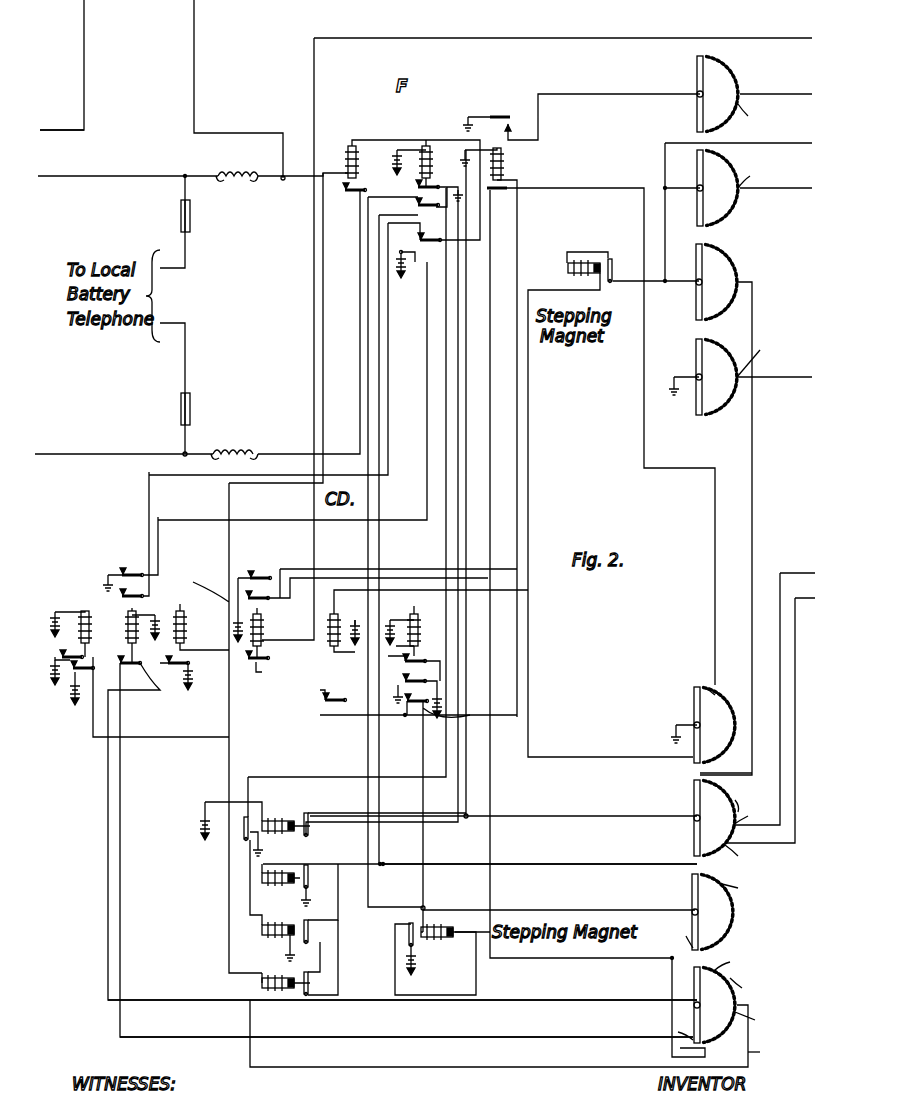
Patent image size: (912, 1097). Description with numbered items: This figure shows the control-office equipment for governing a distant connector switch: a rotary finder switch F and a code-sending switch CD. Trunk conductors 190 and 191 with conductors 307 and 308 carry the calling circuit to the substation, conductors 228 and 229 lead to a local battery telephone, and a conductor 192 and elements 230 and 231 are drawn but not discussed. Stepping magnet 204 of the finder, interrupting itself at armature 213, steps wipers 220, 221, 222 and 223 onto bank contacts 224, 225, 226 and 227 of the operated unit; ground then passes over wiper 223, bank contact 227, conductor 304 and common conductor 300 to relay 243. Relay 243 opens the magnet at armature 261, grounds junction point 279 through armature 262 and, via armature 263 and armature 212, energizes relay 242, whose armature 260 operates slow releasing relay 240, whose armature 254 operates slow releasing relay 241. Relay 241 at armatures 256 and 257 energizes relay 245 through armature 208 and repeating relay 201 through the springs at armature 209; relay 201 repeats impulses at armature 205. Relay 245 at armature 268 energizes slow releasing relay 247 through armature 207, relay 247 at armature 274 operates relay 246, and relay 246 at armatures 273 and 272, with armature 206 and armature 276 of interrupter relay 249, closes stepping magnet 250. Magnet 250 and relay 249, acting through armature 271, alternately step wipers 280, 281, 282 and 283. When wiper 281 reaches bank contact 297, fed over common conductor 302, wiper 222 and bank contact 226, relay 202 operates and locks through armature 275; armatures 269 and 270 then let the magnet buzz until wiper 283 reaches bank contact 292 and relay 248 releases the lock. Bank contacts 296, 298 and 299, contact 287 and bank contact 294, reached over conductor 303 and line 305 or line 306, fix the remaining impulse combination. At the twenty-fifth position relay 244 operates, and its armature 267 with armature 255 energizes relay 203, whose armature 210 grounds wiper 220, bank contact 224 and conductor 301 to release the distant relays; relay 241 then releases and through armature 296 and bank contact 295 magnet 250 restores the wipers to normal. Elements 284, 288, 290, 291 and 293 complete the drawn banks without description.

The trunk conductor 190 is at (60, 130).
The trunk conductor 191 is at (64, 176).
The line conductor 192 is at (80, 452).
The repeating relay 201 is at (352, 146).
The relay 202 is at (426, 146).
The relay 203 is at (505, 166).
The stepping magnet 204 is at (580, 262).
The armature 205 is at (298, 328).
The armature 206 is at (416, 188).
The armature 207 is at (416, 206).
The armature 208 is at (418, 241).
The armature 209 is at (292, 386).
The armature 210 is at (497, 110).
The armature 212 is at (500, 192).
The armature 213 is at (612, 258).
The wiper 220 is at (696, 92).
The wiper 221 is at (697, 171).
The wiper 222 is at (694, 301).
The wiper 223 is at (694, 368).
The bank contact 224 is at (742, 118).
The bank contact 225 is at (757, 174).
The bank contact 226 is at (738, 282).
The bank contact 227 is at (765, 356).
The conductor 228 is at (162, 270).
The conductor 229 is at (190, 310).
The coil 230 is at (238, 186).
The coil 231 is at (234, 448).
The slow releasing relay 240 is at (78, 608).
The slow releasing relay 241 is at (140, 616).
The relay 242 is at (188, 628).
The relay 243 is at (262, 630).
The relay 244 is at (334, 612).
The relay 245 is at (420, 598).
The slow releasing relay 246 is at (272, 818).
The slow releasing relay 247 is at (262, 878).
The relay 248 is at (262, 928).
The slow releasing interrupter relay 249 is at (262, 980).
The stepping magnet 250 is at (440, 924).
The armature 254 is at (80, 656).
The armature 255 is at (74, 672).
The armature 256 is at (128, 566).
The armature 257 is at (140, 590).
The armature 260 is at (190, 660).
The armature 261 is at (258, 572).
The armature 262 is at (266, 592).
The armature 263 is at (270, 668).
The armature 267 is at (346, 678).
The armature 268 is at (428, 660).
The armature 269 is at (428, 680).
The armature 270 is at (456, 813).
The armature 271 is at (414, 948).
The armature 272 is at (310, 812).
The armature 273 is at (244, 840).
The armature 274 is at (312, 878).
The armature 275 is at (312, 930).
The armature 276 is at (312, 983).
The junction point 279 is at (226, 728).
The wiper 280 is at (693, 700).
The wiper 281 is at (694, 796).
The wiper 282 is at (693, 890).
The wiper 283 is at (694, 984).
The contact bank 284 is at (726, 692).
The contact 287 is at (758, 816).
The contact segment 288 is at (754, 796).
The contact 290 is at (674, 940).
The contact segment 291 is at (752, 986).
The bank contact 292 is at (519, 1036).
The conductor 293 is at (770, 1050).
The bank contact 294 is at (747, 857).
The bank contact 295 is at (406, 1028).
The bank contact 296 is at (170, 700).
The bank contact 297 is at (700, 773).
The bank contact 298 is at (747, 886).
The bank contact 299 is at (737, 959).
The common conductor 300 is at (740, 48).
The conductor 301 is at (752, 93).
The common conductor 302 is at (778, 140).
The conductor 303 is at (790, 188).
The conductor 304 is at (797, 366).
The line 305 is at (790, 572).
The line 306 is at (805, 598).
The conductor 307 is at (96, 17).
The conductor 308 is at (206, 19).